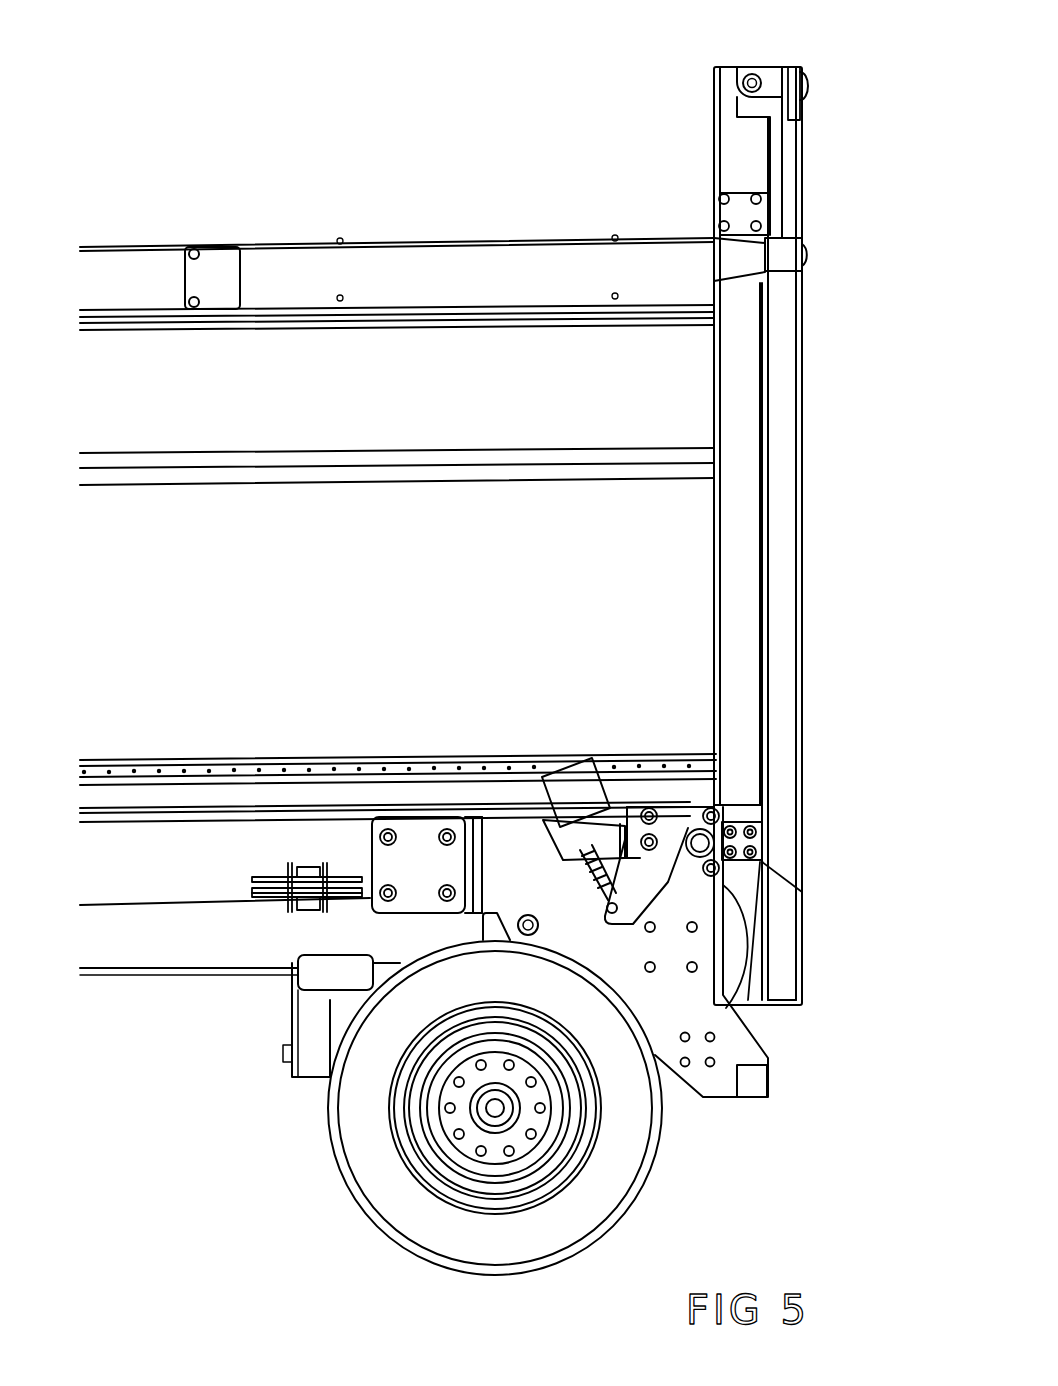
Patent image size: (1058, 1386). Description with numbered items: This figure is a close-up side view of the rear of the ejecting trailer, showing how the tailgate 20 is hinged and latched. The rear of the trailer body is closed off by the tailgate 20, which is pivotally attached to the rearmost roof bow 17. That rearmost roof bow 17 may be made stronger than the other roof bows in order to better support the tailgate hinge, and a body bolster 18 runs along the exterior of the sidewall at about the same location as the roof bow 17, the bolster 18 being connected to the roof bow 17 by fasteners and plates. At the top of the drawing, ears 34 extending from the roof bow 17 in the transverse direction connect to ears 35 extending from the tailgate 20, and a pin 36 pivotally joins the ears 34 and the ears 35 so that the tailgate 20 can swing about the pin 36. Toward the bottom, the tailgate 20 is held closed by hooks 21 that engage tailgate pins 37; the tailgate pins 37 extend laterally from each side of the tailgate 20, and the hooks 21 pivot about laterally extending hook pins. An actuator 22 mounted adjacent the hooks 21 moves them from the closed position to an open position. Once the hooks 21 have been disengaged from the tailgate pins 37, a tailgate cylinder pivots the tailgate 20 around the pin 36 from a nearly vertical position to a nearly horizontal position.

The roof bow 17 is at (714, 88).
The body bolster 18 is at (747, 545).
The tailgate 20 is at (805, 323).
The hook 21 is at (663, 877).
The actuator 22 is at (588, 798).
The ear 34 is at (745, 103).
The ear 35 is at (765, 74).
The pin 36 is at (752, 74).
The tailgate pin 37 is at (740, 848).